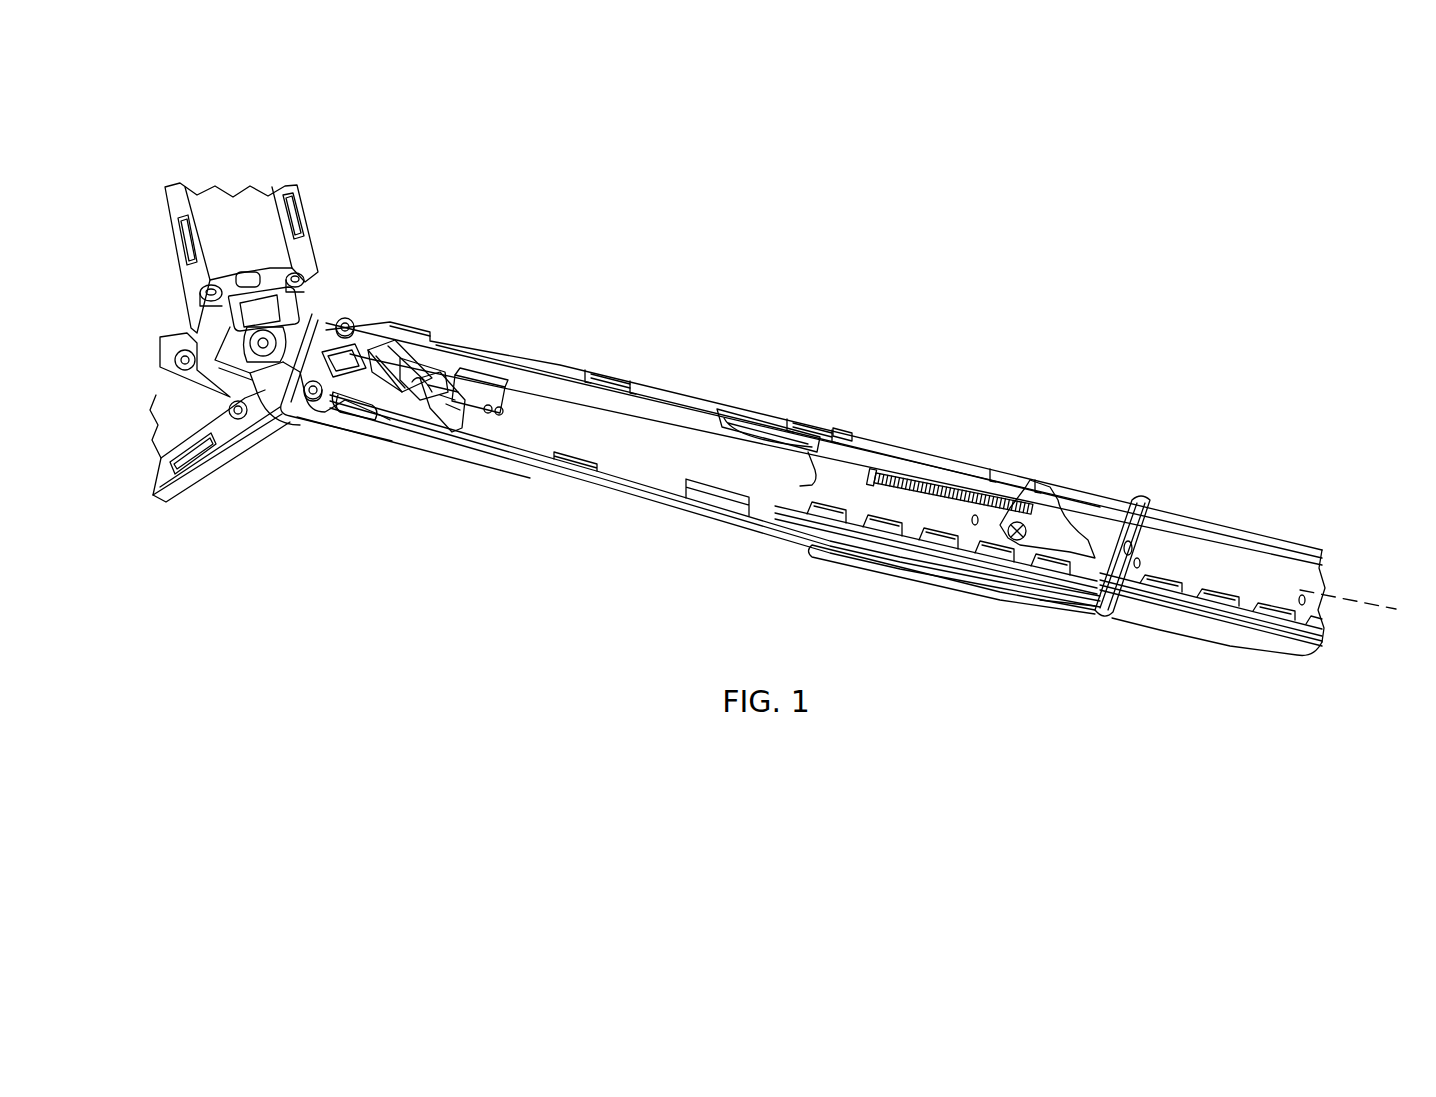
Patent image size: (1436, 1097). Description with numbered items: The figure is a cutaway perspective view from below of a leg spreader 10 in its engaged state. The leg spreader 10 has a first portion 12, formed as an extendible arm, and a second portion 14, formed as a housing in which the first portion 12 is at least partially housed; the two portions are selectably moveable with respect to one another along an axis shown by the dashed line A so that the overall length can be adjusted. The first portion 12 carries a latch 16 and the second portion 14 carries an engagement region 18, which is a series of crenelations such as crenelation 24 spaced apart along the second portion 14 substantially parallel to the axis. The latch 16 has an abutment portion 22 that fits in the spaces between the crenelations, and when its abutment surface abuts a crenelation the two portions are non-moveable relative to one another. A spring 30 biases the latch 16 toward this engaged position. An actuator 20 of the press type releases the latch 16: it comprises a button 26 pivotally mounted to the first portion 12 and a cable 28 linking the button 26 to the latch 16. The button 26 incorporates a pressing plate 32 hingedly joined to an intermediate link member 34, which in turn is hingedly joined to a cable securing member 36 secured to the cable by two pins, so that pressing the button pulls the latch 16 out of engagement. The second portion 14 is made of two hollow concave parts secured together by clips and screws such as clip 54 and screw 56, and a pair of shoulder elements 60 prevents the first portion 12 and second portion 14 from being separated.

The leg spreader 10 is at (669, 268).
The first portion 12 is at (648, 472).
The second portion 14 is at (1190, 543).
The latch 16 is at (1037, 522).
The engagement region 18 is at (1097, 604).
The actuator 20 is at (372, 345).
The abutment portion 22 is at (1010, 590).
The crenelation 24 is at (880, 550).
The button 26 is at (370, 420).
The cable 28 is at (700, 410).
The spring 30 is at (935, 482).
The pressing plate 32 is at (410, 430).
The intermediate link member 34 is at (455, 430).
The cable securing member 36 is at (487, 390).
The clip 54 is at (613, 372).
The screw 56 is at (345, 318).
The shoulder element 60 is at (820, 450).
The axis A is at (1359, 607).